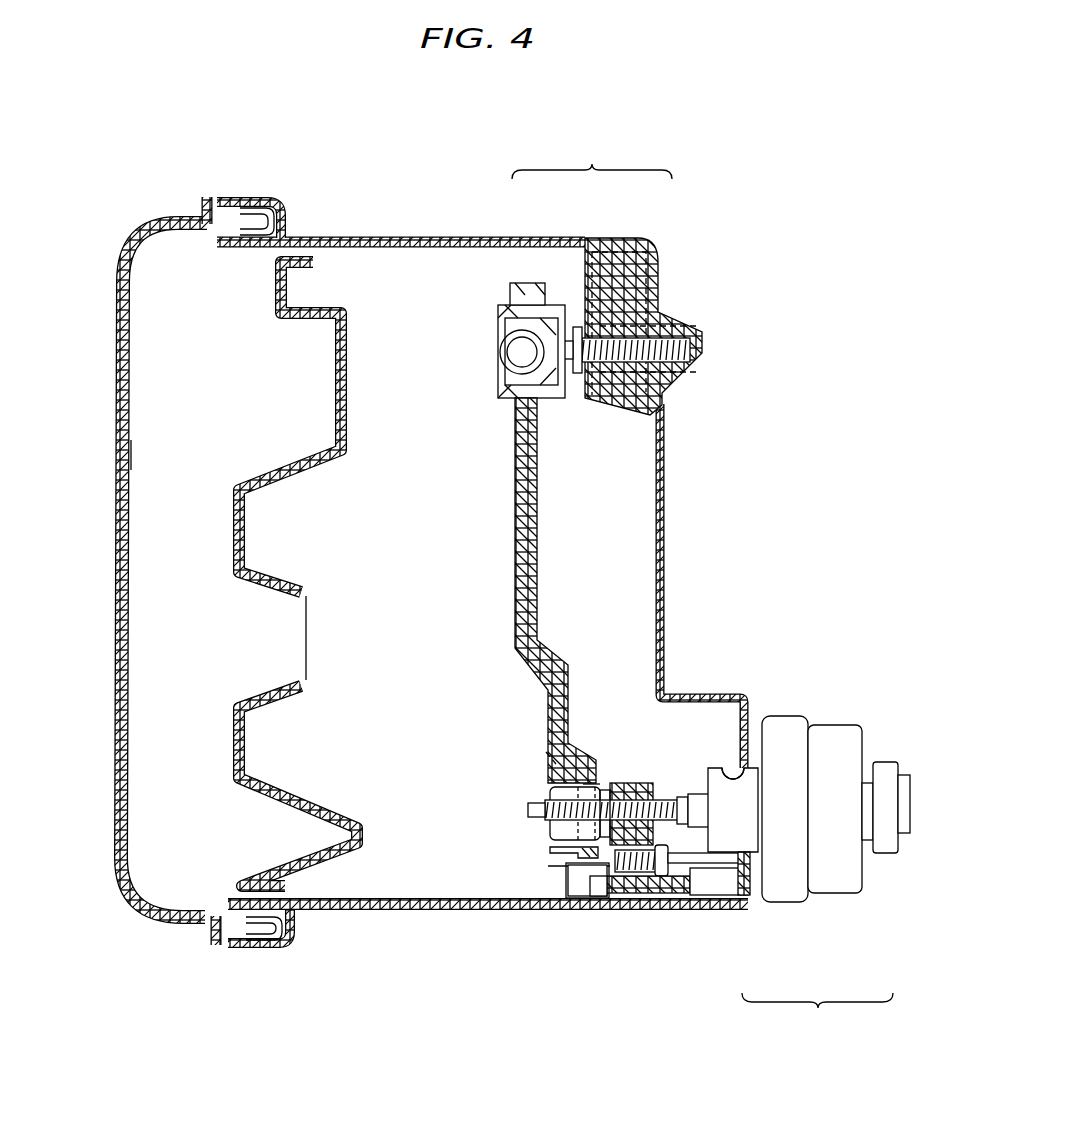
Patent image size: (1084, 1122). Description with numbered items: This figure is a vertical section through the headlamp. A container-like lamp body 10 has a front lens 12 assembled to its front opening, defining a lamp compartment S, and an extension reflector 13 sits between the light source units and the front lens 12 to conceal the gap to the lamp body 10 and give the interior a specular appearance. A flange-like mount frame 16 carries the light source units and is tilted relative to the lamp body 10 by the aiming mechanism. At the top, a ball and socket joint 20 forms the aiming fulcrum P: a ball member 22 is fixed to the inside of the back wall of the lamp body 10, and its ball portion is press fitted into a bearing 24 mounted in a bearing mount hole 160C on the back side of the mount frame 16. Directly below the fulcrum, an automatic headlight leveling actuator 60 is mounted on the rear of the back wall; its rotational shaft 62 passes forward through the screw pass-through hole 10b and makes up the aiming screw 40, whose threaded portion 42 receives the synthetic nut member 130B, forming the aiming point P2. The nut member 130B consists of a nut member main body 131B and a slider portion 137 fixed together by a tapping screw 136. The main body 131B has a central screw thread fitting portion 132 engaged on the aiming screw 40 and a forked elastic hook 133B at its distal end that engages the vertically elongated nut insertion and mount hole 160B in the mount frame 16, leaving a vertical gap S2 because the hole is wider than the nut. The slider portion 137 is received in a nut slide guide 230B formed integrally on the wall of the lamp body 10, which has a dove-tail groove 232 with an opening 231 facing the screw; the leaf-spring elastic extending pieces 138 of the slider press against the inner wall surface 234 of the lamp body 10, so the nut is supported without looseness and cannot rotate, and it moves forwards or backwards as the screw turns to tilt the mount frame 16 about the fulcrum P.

The lamp body 10 is at (666, 490).
The screw pass-through hole 10b is at (730, 778).
The front lens 12 is at (122, 388).
The extension reflector 13 is at (240, 520).
The mount frame 16 is at (540, 575).
The ball and socket joint 20 is at (592, 158).
The ball member 22 is at (520, 300).
The bearing 24 is at (568, 305).
The aiming screw 40 is at (560, 828).
The threaded portion 42 is at (565, 850).
The automatic headlight leveling actuator 60 is at (818, 725).
The rotational shaft 62 is at (712, 800).
The nut member 130B is at (819, 947).
The nut member main body 131B is at (680, 842).
The screw thread fitting portion 132 is at (628, 790).
The elastic hook 133B is at (552, 795).
The tapping screw 136 is at (682, 900).
The slider portion 137 is at (712, 898).
The elastic extending piece 138 is at (636, 900).
The nut insertion and mount hole 160B is at (545, 750).
The bearing mount hole 160C is at (500, 385).
The nut slide guide 230B is at (582, 898).
The opening 231 is at (552, 880).
The dove-tail groove 232 is at (570, 905).
The inner wall surface 234 is at (592, 900).
The aiming fulcrum P is at (485, 352).
The aiming point P2 is at (515, 810).
The lamp compartment S is at (148, 458).
The vertical gap S2 is at (582, 785).